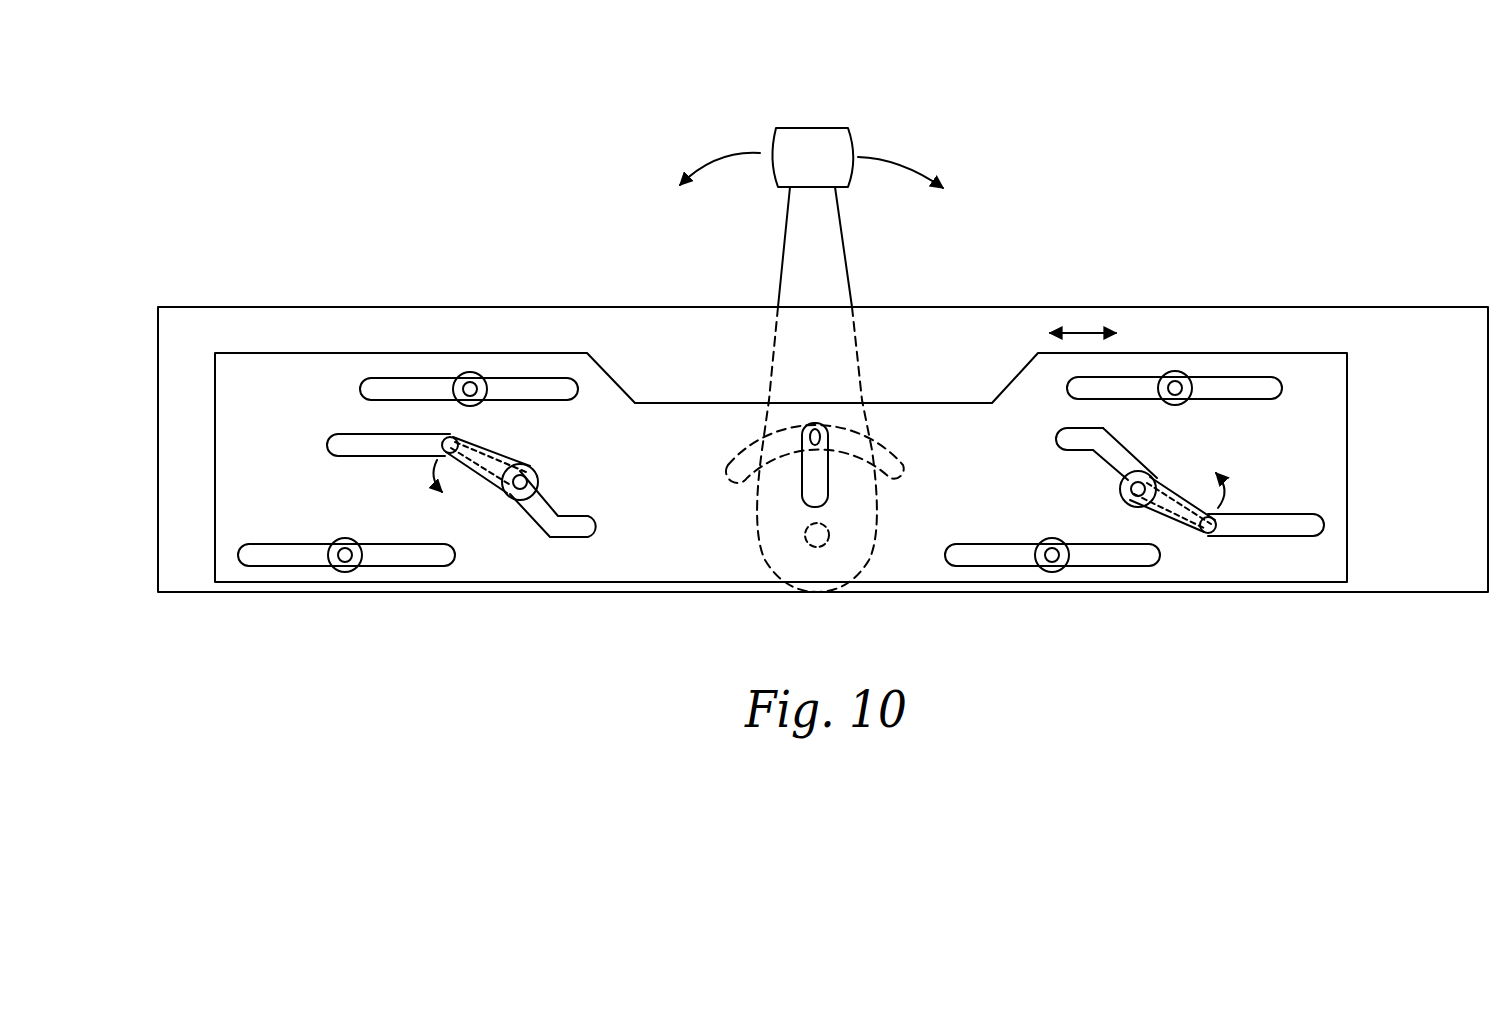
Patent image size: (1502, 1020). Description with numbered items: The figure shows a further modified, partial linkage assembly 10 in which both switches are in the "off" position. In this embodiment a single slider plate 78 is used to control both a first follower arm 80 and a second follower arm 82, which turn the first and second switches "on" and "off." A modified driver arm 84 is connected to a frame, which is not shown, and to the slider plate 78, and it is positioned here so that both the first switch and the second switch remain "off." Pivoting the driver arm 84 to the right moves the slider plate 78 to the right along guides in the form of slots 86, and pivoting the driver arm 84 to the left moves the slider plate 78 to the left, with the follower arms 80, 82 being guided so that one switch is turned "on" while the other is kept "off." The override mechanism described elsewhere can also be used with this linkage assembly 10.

The linkage assembly 10 is at (1362, 485).
The slider plate 78 is at (1308, 350).
The first follower arm 80 is at (1133, 503).
The second follower arm 82 is at (505, 495).
The driver arm 84 is at (848, 268).
The slots 86 is at (393, 383).